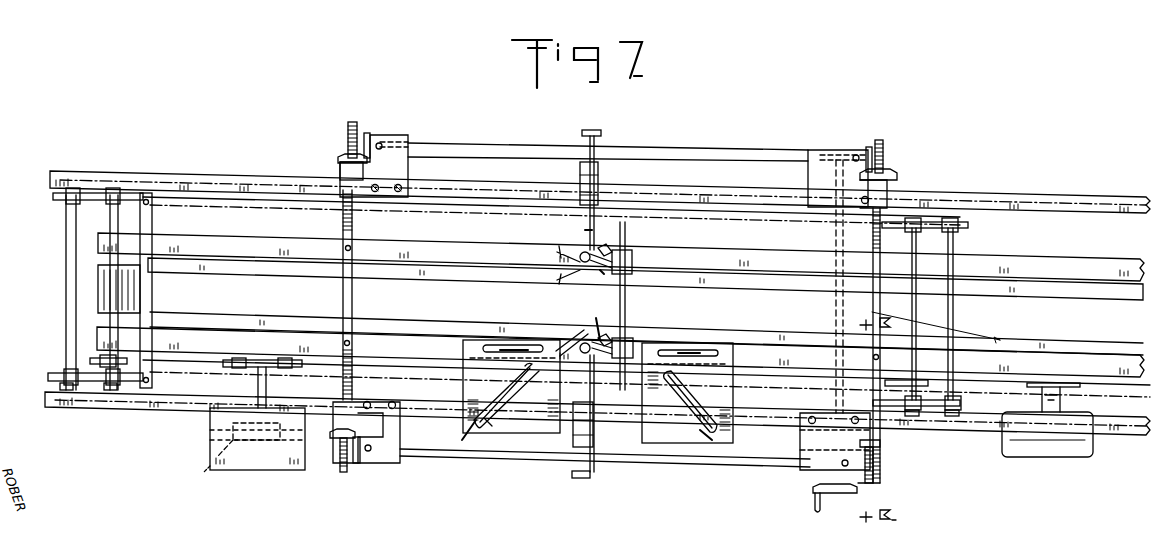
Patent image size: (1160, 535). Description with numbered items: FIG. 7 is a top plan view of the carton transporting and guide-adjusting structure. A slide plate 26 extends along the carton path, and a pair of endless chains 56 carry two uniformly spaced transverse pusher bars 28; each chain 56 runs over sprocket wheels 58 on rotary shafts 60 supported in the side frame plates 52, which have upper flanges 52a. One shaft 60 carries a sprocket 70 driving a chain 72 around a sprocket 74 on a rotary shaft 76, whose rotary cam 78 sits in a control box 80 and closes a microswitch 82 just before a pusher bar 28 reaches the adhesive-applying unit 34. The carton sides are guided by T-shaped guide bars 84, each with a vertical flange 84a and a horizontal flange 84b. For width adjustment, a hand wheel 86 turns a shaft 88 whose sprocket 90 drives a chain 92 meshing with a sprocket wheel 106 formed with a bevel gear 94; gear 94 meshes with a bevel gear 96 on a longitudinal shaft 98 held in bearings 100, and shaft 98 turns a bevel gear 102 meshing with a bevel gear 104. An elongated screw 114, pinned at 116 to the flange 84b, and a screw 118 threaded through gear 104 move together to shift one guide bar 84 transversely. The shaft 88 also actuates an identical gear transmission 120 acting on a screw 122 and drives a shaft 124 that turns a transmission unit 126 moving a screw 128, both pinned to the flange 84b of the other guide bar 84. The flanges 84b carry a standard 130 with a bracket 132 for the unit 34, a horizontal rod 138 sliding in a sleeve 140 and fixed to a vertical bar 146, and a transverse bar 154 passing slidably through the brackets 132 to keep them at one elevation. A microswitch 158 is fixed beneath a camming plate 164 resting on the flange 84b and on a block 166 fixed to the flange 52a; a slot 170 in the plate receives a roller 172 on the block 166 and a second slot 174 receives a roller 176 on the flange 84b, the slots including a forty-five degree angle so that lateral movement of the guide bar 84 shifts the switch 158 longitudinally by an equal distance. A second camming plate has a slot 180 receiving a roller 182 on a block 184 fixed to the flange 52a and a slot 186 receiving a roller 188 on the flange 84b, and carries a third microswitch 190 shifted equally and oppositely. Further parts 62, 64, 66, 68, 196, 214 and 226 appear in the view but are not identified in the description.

The slide plate 26 is at (238, 300).
The transverse pusher bar 28 is at (154, 222).
The adhesive-applying unit 34 is at (650, 260).
The side frame plate 52 is at (186, 172).
The upper flange of side frame member 52a is at (654, 424).
The endless chain 56 is at (262, 201).
The sprocket wheel 58 is at (50, 197).
The rotary shaft 60 is at (66, 292).
The motor housing 62 is at (1052, 458).
The mounting plate 64 is at (1080, 386).
The motor stem 66 is at (1040, 396).
The tie bar 68 is at (884, 384).
The sprocket 70 is at (90, 358).
The chain 72 is at (208, 414).
The additional sprocket 74 is at (272, 362).
The rotary shaft 76 is at (304, 368).
The rotary cam 78 is at (218, 452).
The control box 80 is at (262, 472).
The microswitch 82 is at (210, 472).
The guide bar 84 is at (86, 246).
The vertical flange 84a is at (212, 262).
The horizontal flange 84b is at (394, 270).
The rotary hand wheel 86 is at (830, 500).
The shaft 88 is at (838, 252).
The sprocket 90 is at (840, 160).
The chain 92 is at (898, 178).
The rotary bevel gear 94 is at (884, 460).
The second bevel gear 96 is at (870, 486).
The rotary shaft 98 is at (546, 460).
The bearing 100 is at (410, 172).
The rotary bevel gear 102 is at (370, 132).
The second bevel gear 104 is at (336, 158).
The sprocket wheel 106 is at (918, 462).
The elongated screw member 114 is at (880, 480).
The pin connection 116 is at (346, 252).
The screw 118 is at (343, 474).
The gear transmission 120 is at (910, 168).
The screw 122 is at (882, 140).
The shaft 124 is at (698, 148).
The gear transmission unit 126 is at (346, 152).
The screw 128 is at (356, 120).
The standard 130 is at (580, 254).
The bracket 132 is at (634, 260).
The horizontal rod 138 is at (586, 222).
The sleeve 140 is at (600, 178).
The vertically extending bar 146 is at (602, 132).
The transverse bar 154 is at (626, 300).
The microswitch 158 is at (518, 383).
The plate 164 is at (476, 440).
The block 166 is at (511, 392).
The elongated slot 170 is at (524, 372).
The roller 172 is at (494, 408).
The second slot 174 is at (494, 342).
The roller 176 is at (526, 344).
The elongated slot 180 is at (684, 392).
The roller 182 is at (690, 396).
The block 184 is at (706, 432).
The elongated slot 186 is at (700, 346).
The roller 188 is at (700, 348).
The third microswitch 190 is at (660, 376).
The link 196 is at (600, 320).
The roller 214 is at (612, 250).
The link arm 226 is at (562, 318).